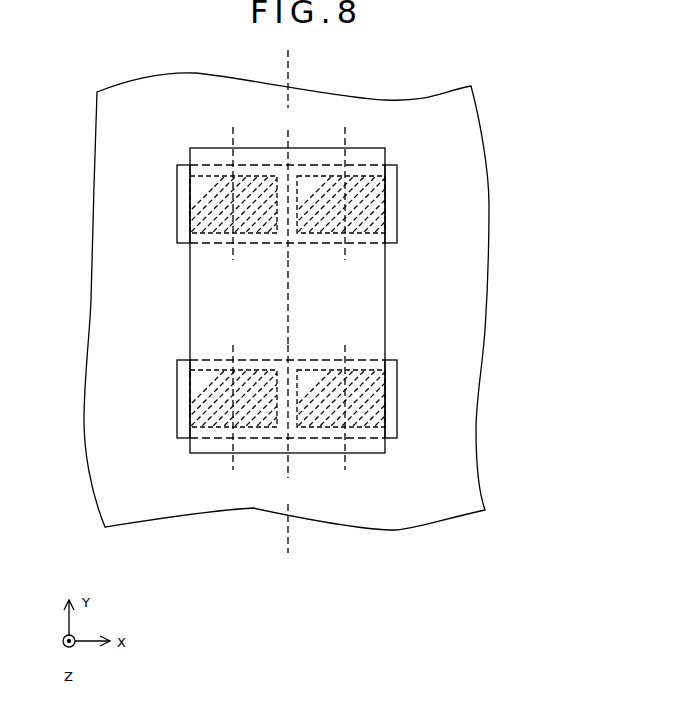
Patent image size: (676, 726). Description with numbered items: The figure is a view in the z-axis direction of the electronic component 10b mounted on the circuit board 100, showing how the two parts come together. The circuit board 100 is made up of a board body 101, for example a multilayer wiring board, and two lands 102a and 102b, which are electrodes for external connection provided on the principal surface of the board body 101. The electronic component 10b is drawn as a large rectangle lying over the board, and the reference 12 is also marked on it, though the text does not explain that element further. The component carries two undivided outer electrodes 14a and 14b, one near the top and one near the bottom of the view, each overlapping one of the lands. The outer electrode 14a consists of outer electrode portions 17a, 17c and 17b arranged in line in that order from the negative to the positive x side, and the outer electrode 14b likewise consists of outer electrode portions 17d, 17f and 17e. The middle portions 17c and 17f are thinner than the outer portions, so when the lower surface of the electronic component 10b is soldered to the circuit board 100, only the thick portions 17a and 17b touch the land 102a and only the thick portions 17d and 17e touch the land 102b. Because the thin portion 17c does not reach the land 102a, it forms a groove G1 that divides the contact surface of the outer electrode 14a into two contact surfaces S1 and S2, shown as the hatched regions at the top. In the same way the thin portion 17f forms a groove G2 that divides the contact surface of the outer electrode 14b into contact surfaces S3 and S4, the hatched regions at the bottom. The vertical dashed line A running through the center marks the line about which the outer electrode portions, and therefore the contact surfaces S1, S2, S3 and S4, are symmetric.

The circuit board 100 is at (328, 301).
The board body 101 is at (489, 246).
The electronic component 10b is at (290, 303).
The active layer 12 is at (168, 297).
The land 102a is at (317, 234).
The land 102b is at (312, 401).
The outer electrode 14a is at (399, 251).
The outer electrode 14b is at (399, 433).
The outer electrode portion 17a is at (248, 233).
The outer electrode portion 17b is at (424, 204).
The outer electrode portion 17c is at (290, 234).
The outer electrode portion 17d is at (248, 378).
The outer electrode portion 17e is at (412, 371).
The outer electrode portion 17f is at (291, 373).
The contact surface S1 is at (233, 179).
The contact surface S2 is at (345, 179).
The contact surface S3 is at (238, 424).
The contact surface S4 is at (347, 423).
The groove G1 is at (290, 182).
The groove G2 is at (290, 426).
The line A is at (287, 318).